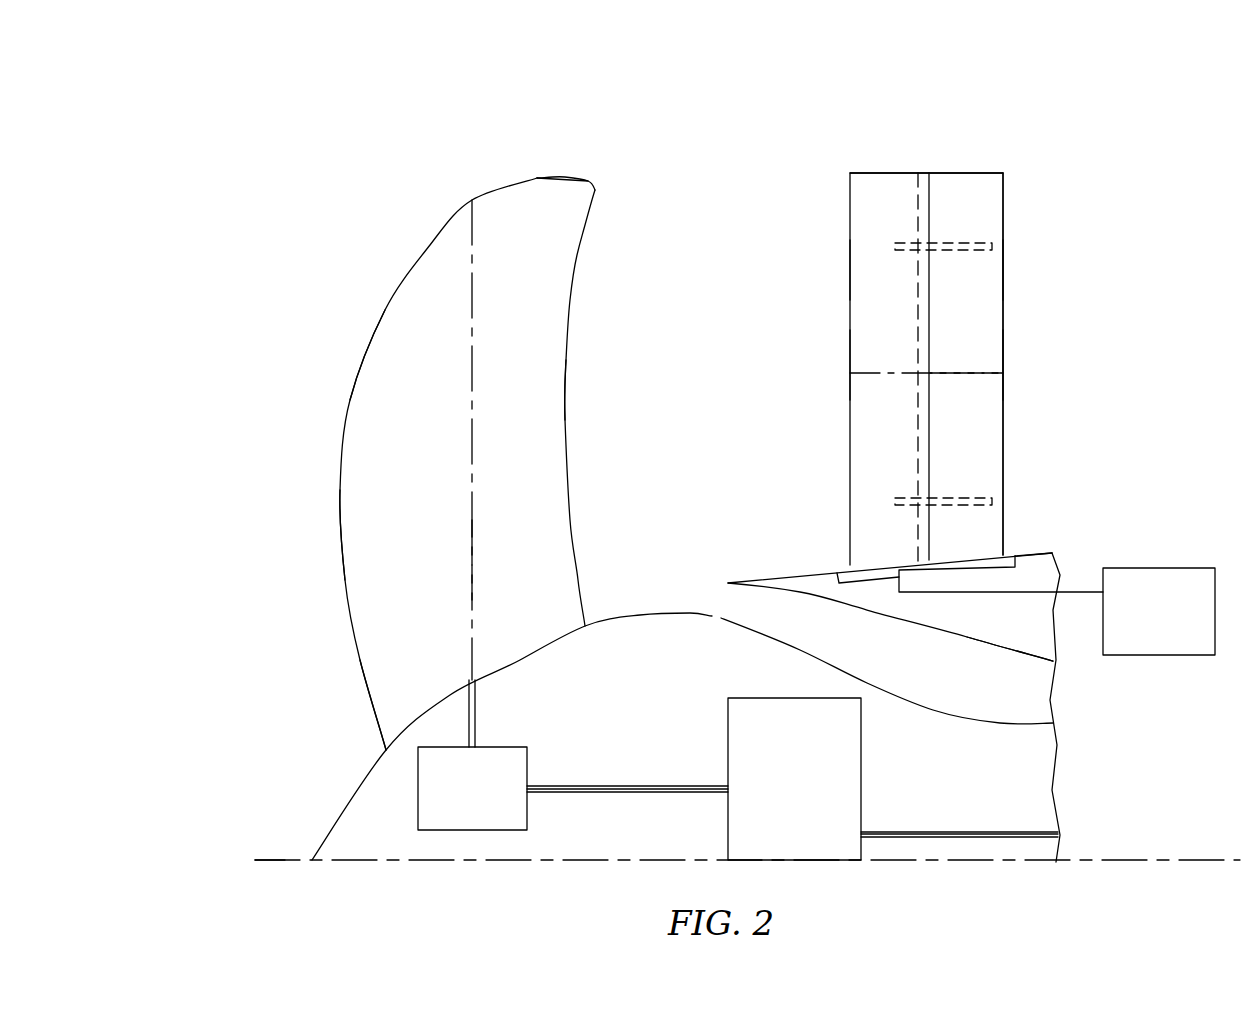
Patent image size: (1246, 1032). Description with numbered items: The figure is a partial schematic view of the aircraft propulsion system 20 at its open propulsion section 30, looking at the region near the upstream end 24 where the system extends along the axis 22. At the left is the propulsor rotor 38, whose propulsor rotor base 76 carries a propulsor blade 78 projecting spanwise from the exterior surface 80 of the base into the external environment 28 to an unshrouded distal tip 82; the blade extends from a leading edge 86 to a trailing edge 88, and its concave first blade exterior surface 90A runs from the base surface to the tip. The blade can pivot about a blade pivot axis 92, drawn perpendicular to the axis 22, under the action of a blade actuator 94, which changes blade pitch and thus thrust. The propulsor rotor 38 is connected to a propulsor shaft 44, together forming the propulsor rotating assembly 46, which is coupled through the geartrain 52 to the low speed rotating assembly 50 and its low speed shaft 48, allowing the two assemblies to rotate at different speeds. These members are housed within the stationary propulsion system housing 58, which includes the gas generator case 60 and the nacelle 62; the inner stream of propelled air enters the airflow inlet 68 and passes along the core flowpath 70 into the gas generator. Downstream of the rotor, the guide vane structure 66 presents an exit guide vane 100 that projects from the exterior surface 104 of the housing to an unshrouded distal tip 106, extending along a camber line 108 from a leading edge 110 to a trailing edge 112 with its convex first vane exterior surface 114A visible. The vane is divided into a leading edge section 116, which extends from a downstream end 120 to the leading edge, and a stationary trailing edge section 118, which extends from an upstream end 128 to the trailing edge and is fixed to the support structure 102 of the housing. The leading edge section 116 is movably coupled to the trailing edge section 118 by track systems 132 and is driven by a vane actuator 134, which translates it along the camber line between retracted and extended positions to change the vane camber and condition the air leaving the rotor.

The aircraft propulsion system 20 is at (283, 146).
The axis 22 is at (265, 855).
The upstream end 24 is at (312, 858).
The external environment 28 is at (215, 311).
The open propulsion section 30 is at (794, 90).
The propulsor rotor 38 is at (508, 158).
The propulsor shaft 44 is at (628, 783).
The propulsor rotating assembly 46 is at (666, 768).
The low speed shaft 48 is at (995, 831).
The low speed rotating assembly 50 is at (1042, 824).
The geartrain 52 is at (812, 807).
The propulsion system housing 58 is at (1058, 543).
The gas generator case 60 is at (1020, 652).
The nacelle 62 is at (1035, 548).
The guide vane structure 66 is at (1030, 158).
The airflow inlet 68 is at (722, 600).
The core flowpath 70 is at (946, 677).
The propulsor rotor base 76 is at (522, 664).
The propulsor blade 78 is at (336, 531).
The exterior surface 80 is at (410, 730).
The distal tip 82 is at (540, 176).
The leading edge 86 is at (345, 425).
The trailing edge 88 is at (566, 408).
The first blade exterior surface 90A is at (447, 488).
The blade pivot axis 92 is at (475, 583).
The blade actuator 94 is at (485, 804).
The exit guide vane 100 is at (1017, 310).
The support structure 102 is at (874, 590).
The exterior surface 104 is at (855, 565).
The distal tip 106 is at (897, 172).
The camber line 108 is at (996, 393).
The leading edge 110 is at (848, 350).
The trailing edge 112 is at (1004, 362).
The first vane exterior surface 114A is at (906, 329).
The leading edge section 116 is at (838, 272).
The trailing edge section 118 is at (1012, 268).
The downstream end 120 is at (931, 405).
The upstream end 128 is at (917, 455).
The track system 132 is at (963, 243).
The vane actuator 134 is at (1178, 627).